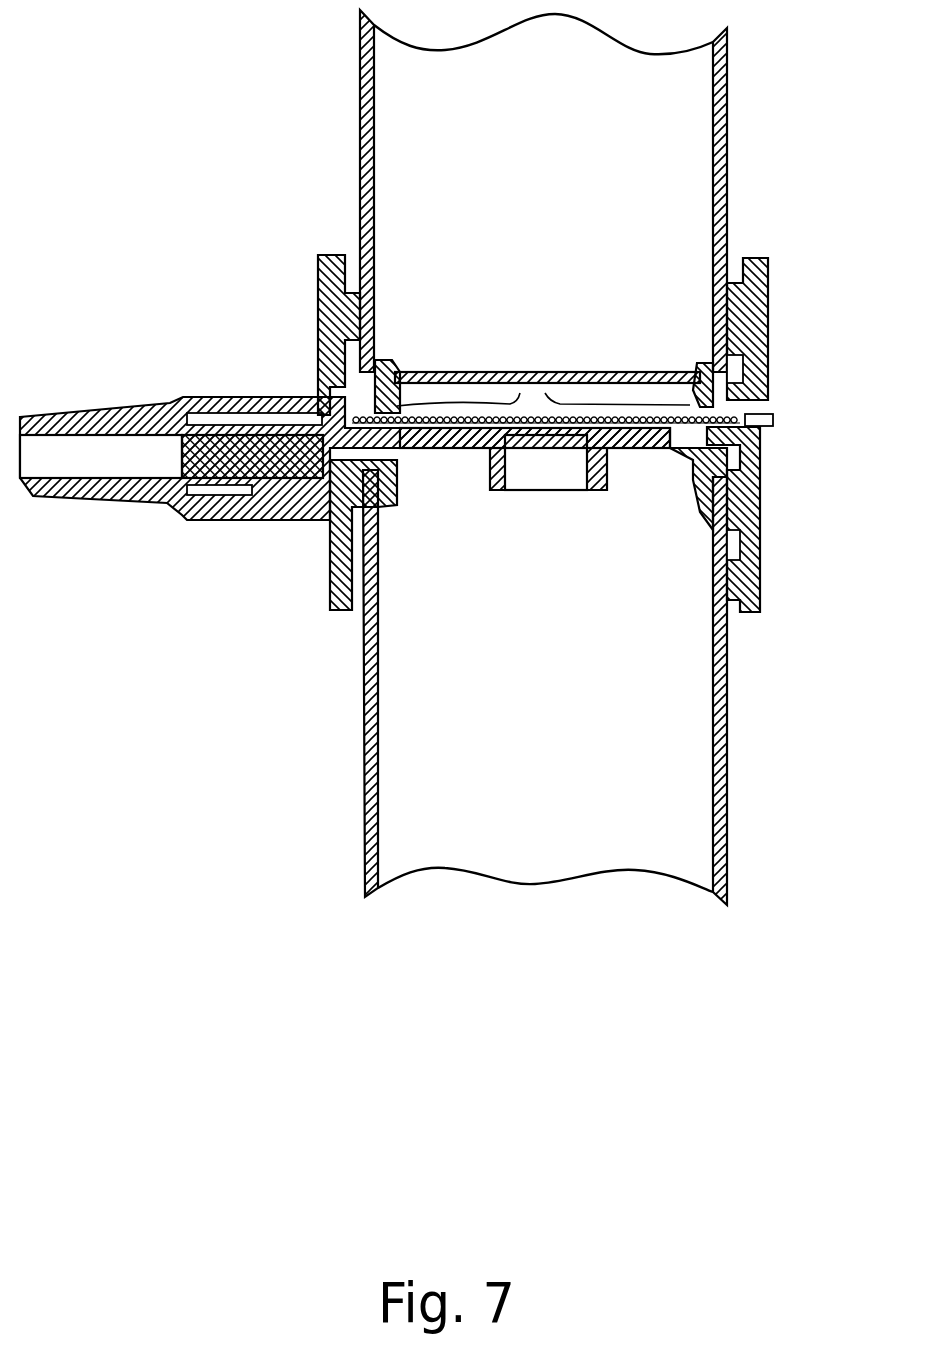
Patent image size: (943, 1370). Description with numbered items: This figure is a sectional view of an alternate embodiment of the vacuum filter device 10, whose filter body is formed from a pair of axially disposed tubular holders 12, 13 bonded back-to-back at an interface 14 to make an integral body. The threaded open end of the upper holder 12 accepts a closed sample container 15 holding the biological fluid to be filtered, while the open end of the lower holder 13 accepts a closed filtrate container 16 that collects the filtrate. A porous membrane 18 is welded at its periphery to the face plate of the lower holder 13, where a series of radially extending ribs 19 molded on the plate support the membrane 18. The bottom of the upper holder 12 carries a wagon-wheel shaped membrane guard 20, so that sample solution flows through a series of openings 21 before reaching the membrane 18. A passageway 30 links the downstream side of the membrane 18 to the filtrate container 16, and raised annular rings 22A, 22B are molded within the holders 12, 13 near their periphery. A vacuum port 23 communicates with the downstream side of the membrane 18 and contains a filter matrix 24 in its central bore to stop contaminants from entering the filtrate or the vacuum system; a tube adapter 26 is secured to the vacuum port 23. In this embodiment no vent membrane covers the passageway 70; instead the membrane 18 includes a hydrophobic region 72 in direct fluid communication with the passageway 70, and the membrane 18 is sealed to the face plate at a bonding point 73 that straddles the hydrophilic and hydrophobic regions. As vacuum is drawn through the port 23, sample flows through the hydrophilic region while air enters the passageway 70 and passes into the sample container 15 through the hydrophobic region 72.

The vacuum filter device 10 is at (198, 138).
The tubular holder 12 is at (789, 329).
The tubular holder 13 is at (775, 540).
The interface 14 is at (325, 388).
The sample container 15 is at (727, 100).
The filtrate container 16 is at (728, 862).
The porous membrane 18 is at (350, 378).
The ribs 19 is at (493, 437).
The membrane guard 20 is at (413, 368).
The openings 21 is at (593, 372).
The raised annular ring 22A is at (730, 367).
The raised annular ring 22B is at (728, 547).
The vacuum port 23 is at (235, 487).
The filter matrix 24 is at (123, 503).
The tube adapter 26 is at (300, 520).
The passageway 30 is at (555, 492).
The passageway 70 is at (757, 440).
The hydrophobic region 72 is at (705, 375).
The bonding point 73 is at (733, 472).